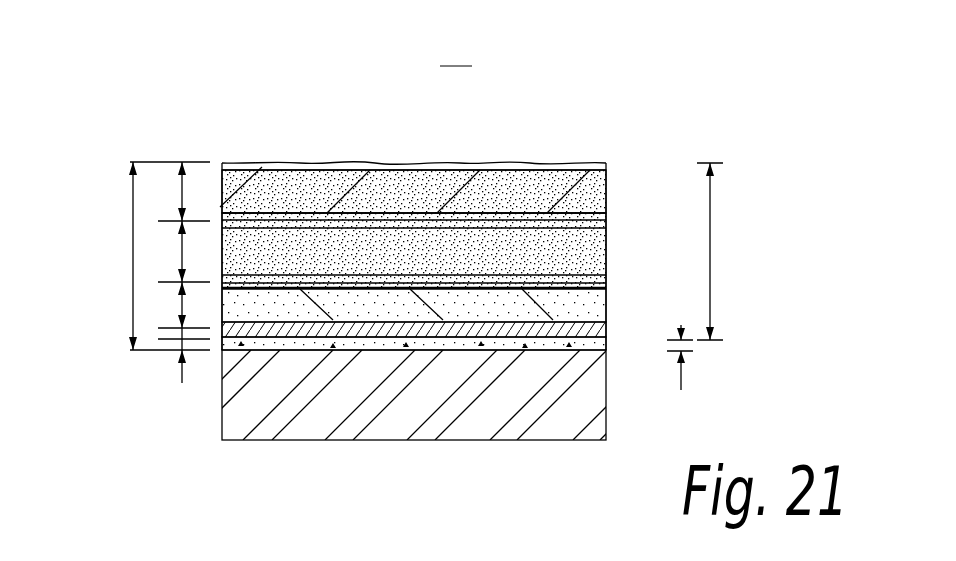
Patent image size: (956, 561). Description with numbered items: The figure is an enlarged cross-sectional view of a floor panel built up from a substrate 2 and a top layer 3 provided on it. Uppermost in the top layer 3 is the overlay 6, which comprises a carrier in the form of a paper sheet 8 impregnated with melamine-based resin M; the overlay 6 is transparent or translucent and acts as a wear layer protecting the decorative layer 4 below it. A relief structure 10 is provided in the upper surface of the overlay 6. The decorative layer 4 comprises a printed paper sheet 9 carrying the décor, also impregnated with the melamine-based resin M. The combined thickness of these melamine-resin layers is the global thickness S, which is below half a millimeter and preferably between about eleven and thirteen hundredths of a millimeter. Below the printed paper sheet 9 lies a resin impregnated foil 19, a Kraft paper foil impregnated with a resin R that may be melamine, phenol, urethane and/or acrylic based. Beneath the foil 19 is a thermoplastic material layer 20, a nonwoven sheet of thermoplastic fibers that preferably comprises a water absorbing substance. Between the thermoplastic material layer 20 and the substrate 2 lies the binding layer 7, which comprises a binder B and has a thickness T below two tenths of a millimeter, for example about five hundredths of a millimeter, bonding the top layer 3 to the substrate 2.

The substrate 2 is at (597, 422).
The top layer 3 is at (131, 260).
The decorative layer 4 is at (182, 252).
The overlay 6 is at (182, 190).
The binding layer 7 is at (172, 350).
The paper sheet 8 is at (607, 193).
The printed paper sheet 9 is at (607, 255).
The relief structure 10 is at (556, 165).
The resin impregnated foil 19 is at (182, 305).
The thermoplastic material layer 20 is at (180, 330).
The melamine-based resin M is at (380, 165).
The resin R is at (595, 309).
The binder B is at (242, 342).
The global thickness S is at (712, 272).
The thickness of the binding layer T is at (682, 380).